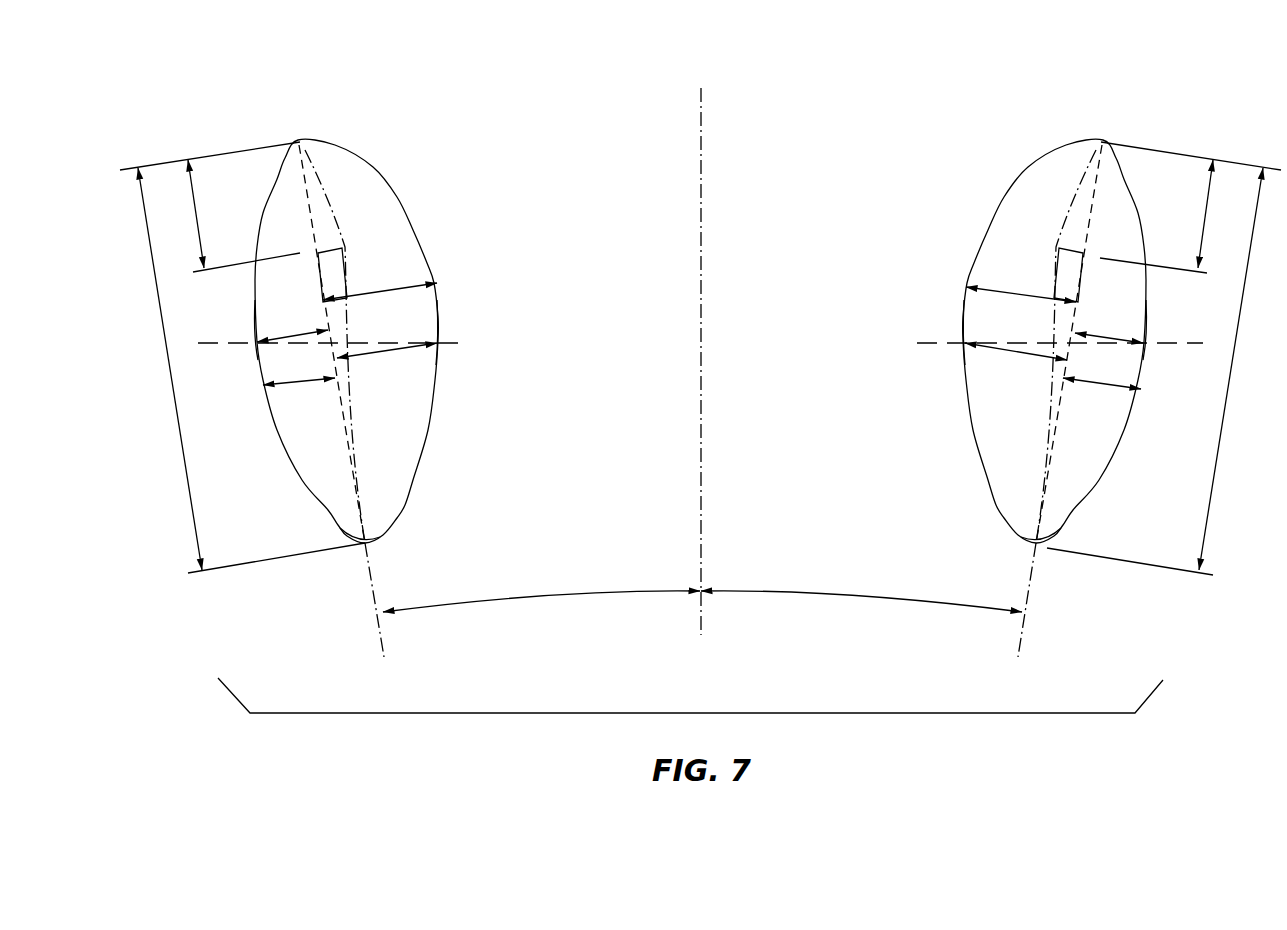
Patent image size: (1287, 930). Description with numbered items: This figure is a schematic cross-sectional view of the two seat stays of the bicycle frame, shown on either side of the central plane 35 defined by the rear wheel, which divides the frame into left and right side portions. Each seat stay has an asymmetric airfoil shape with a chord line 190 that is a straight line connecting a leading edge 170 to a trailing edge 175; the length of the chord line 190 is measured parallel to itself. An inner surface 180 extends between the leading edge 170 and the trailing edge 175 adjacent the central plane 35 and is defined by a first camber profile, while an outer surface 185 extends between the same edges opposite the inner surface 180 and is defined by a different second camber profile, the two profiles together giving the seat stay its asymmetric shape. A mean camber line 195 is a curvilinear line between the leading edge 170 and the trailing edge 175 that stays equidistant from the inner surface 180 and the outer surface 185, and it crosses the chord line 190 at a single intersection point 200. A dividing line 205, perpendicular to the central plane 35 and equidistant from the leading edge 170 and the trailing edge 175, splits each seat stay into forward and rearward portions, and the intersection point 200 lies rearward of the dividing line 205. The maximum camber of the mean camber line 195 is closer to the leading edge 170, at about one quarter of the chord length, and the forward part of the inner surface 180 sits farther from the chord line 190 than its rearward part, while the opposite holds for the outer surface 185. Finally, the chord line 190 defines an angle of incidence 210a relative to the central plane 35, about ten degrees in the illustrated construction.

The central plane 35 is at (701, 113).
The leading edge 170 is at (273, 180).
The trailing edge 175 is at (368, 545).
The inner surface 180 is at (438, 337).
The outer surface 185 is at (256, 338).
The chord line 190 is at (307, 180).
The mean camber line 195 is at (333, 203).
The intersection point 200 is at (343, 420).
The dividing line 205 is at (483, 341).
The angle of incidence 210a is at (538, 594).